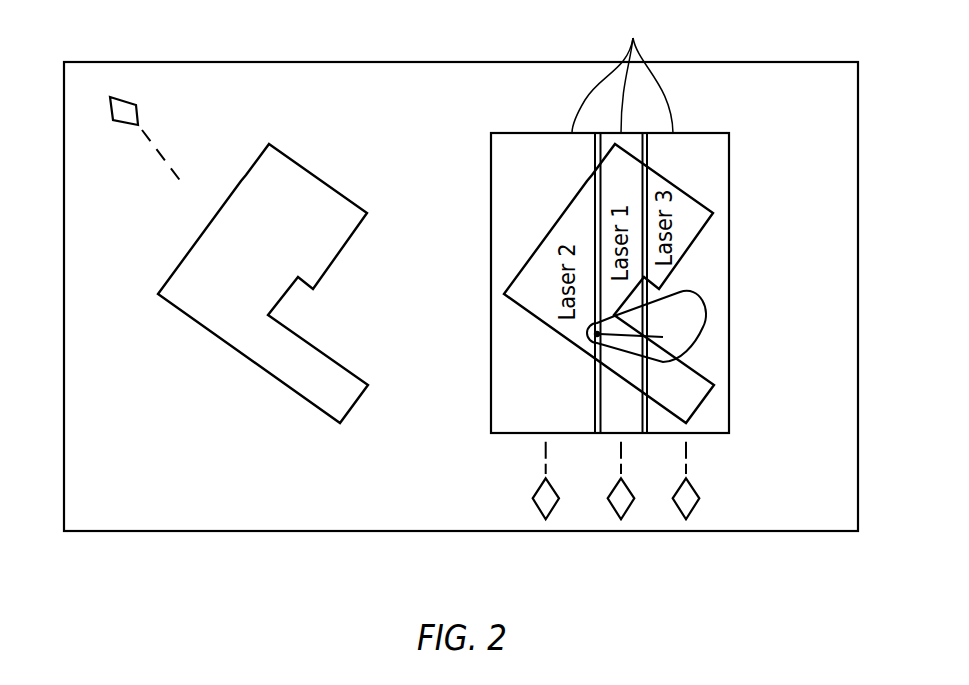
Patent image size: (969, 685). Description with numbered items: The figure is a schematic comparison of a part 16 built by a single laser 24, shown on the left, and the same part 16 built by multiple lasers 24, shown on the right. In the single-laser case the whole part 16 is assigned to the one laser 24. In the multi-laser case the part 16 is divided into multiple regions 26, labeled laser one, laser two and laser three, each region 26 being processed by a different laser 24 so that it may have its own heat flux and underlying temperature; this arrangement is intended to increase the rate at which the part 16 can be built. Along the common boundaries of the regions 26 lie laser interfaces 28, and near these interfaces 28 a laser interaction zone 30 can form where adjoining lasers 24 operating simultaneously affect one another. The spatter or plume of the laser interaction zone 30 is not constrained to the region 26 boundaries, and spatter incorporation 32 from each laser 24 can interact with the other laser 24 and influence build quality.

The part 16 is at (288, 238).
The laser 24 is at (122, 95).
The region 26 is at (622, 72).
The laser interface 28 is at (617, 315).
The laser interaction zone 30 is at (587, 336).
The spatter incorporation 32 is at (663, 337).